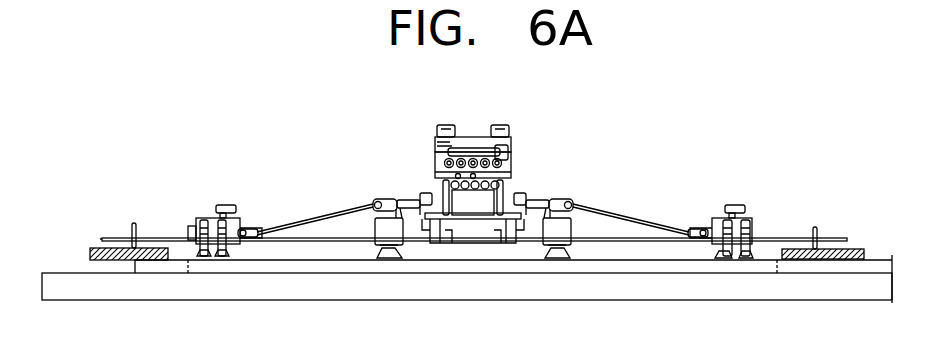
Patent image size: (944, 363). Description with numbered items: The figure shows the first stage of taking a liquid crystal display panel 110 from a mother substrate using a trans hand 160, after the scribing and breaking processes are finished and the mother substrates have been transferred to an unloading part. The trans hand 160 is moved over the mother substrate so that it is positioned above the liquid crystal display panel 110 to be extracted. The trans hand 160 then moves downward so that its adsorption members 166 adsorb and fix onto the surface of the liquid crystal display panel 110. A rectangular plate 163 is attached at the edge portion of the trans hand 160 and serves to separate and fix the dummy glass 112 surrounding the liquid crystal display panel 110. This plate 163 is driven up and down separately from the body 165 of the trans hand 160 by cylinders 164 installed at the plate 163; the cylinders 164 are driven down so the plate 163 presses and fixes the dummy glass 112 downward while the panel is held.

The liquid crystal display panel 110 is at (466, 268).
The dummy glass 112 is at (161, 267).
The trans hand 160 is at (527, 120).
The rectangular plate 163 is at (810, 260).
The cylinders 164 is at (816, 227).
The body 165 is at (632, 243).
The adsorption members 166 is at (727, 258).